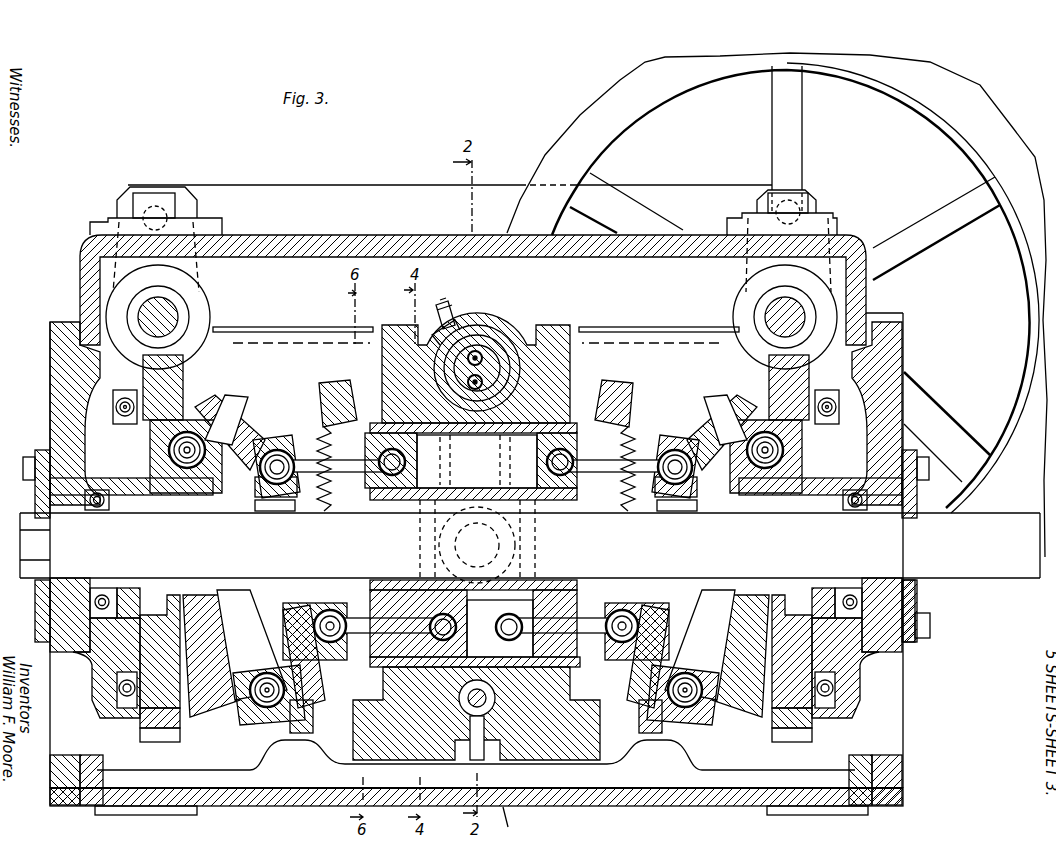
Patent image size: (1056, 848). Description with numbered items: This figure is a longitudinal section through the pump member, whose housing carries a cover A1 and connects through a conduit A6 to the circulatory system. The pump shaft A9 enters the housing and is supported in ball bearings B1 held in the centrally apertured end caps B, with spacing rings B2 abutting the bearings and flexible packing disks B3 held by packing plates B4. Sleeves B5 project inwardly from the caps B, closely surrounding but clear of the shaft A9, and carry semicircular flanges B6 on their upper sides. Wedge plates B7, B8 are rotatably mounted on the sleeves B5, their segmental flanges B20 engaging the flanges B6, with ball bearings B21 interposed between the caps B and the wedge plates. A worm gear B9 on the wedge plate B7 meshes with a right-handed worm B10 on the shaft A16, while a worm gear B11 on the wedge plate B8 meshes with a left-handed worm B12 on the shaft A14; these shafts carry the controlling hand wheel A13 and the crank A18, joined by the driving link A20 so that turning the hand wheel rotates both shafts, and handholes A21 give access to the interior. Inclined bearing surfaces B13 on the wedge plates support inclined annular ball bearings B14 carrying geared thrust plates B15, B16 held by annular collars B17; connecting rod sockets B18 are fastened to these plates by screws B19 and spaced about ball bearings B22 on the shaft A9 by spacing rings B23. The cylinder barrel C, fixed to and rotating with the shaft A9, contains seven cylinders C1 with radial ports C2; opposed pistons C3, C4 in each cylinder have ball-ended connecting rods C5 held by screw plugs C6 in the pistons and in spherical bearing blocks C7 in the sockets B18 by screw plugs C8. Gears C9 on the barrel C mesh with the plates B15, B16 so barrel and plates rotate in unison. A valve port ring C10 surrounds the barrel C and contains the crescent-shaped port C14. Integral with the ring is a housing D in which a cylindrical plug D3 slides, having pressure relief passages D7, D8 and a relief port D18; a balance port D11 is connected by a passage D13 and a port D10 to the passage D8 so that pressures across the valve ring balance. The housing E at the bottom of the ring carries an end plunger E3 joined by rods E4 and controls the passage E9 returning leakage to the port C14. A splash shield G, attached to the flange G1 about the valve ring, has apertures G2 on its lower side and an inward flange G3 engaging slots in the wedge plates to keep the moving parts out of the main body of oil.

The cover A1 is at (352, 235).
The conduit A6 is at (477, 545).
The pump shaft A9 is at (983, 578).
The controlling hand wheel A13 is at (577, 112).
The shaft A14 is at (800, 305).
The shaft A16 is at (172, 313).
The crank A18 is at (158, 187).
The driving link A20 is at (293, 192).
The handhole A21 is at (205, 218).
The cap B is at (70, 370).
The ball bearing B1 is at (62, 450).
The spacing ring B2 is at (77, 517).
The flexible packing disk B3 is at (917, 595).
The packing plate B4 is at (35, 457).
The sleeve B5 is at (740, 528).
The semicircular flange B6 is at (827, 537).
The wedge plate B7 is at (152, 655).
The wedge plate B8 is at (867, 657).
The worm gear B9 is at (140, 735).
The right-handed worm B10 is at (118, 302).
The worm gear B11 is at (812, 735).
The left-handed worm B12 is at (752, 296).
The bearing surface B13 is at (230, 757).
The annular ball bearing B14 is at (773, 447).
The thrust plate B15 is at (248, 670).
The thrust plate B16 is at (713, 413).
The annular collar B17 is at (637, 720).
The connecting rod socket B18 is at (253, 467).
The screw B19 is at (200, 513).
The segmental flange B20 is at (143, 513).
The ball bearing B21 is at (113, 407).
The ball bearing B22 is at (476, 506).
The spacing ring B23 is at (476, 533).
The cylinder barrel C is at (560, 415).
The cylinder C1 is at (395, 330).
The port C2 is at (473, 520).
The piston C3 is at (400, 500).
The piston C4 is at (475, 594).
The connecting rod C5 is at (652, 400).
The screw plug C6 is at (340, 430).
The spherical bearing block C7 is at (484, 465).
The screw plug C8 is at (305, 440).
The gear C9 is at (330, 390).
The valve port ring C10 is at (520, 348).
The crescent-shaped port C14 is at (527, 620).
The housing D is at (470, 330).
The cylindrical plug D3 is at (478, 352).
The pressure relief passage D7 is at (478, 345).
The pressure relief passage D8 is at (505, 385).
The port D10 is at (515, 395).
The balance port D11 is at (477, 541).
The passage D13 is at (475, 461).
The pressure relief port D18 is at (530, 280).
The housing E is at (462, 710).
The end plunger E3 is at (505, 745).
The rod E4 is at (475, 745).
The passage E9 is at (470, 706).
The splash shield G is at (273, 328).
The flange G1 is at (565, 328).
The aperture G2 is at (300, 748).
The inward flange G3 is at (197, 737).